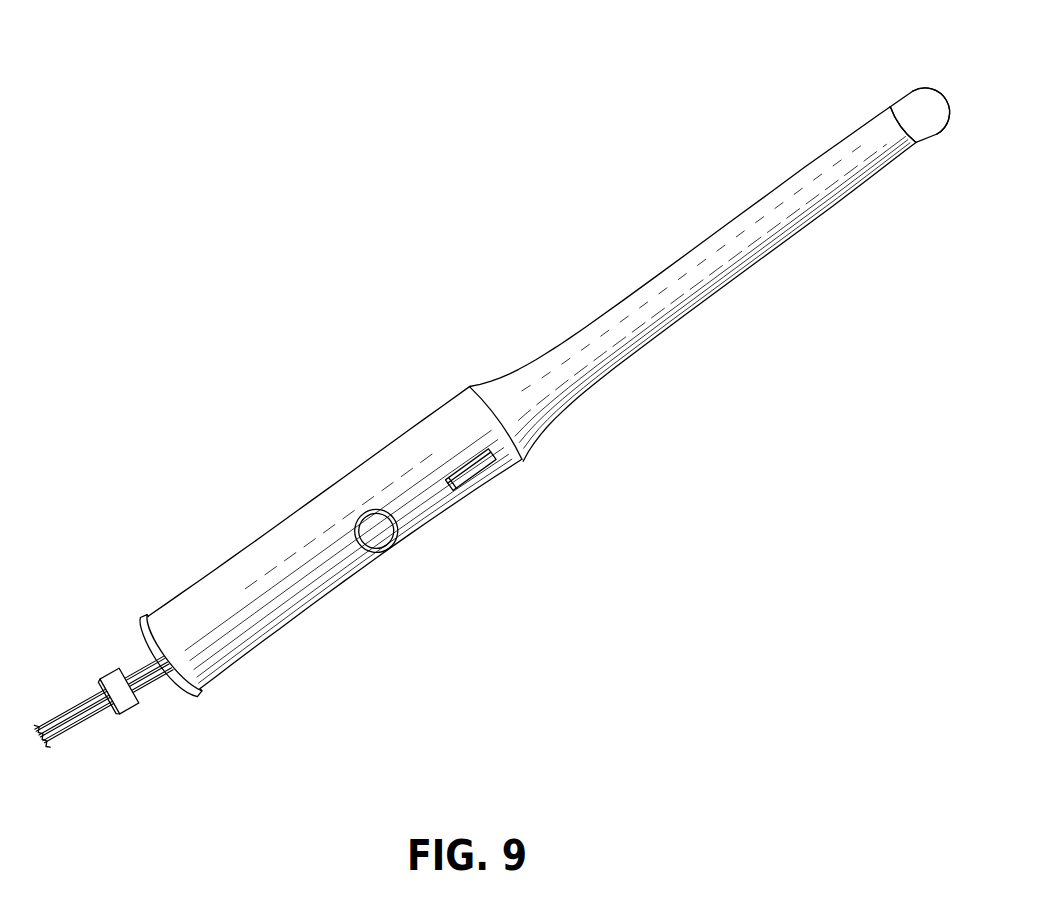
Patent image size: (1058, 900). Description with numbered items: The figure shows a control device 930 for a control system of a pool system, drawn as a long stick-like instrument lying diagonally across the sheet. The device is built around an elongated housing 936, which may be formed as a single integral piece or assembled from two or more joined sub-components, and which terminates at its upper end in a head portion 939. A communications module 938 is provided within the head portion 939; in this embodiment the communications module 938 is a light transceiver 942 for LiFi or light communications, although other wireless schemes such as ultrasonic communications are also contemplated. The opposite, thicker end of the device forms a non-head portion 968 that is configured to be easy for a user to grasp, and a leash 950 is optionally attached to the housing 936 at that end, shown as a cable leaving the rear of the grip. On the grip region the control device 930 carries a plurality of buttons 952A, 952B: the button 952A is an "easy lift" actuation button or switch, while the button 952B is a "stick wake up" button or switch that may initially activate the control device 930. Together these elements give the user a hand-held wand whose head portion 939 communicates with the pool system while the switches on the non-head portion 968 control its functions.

The control device 930 is at (381, 118).
The elongated housing 936 is at (535, 363).
The communications module 938 is at (907, 110).
The head portion 939 is at (917, 103).
The light transceiver 942 is at (927, 137).
The leash 950 is at (47, 723).
The easy lift actuation button 952A is at (376, 531).
The stick wake up button 952B is at (473, 463).
The non-head portion 968 is at (237, 570).